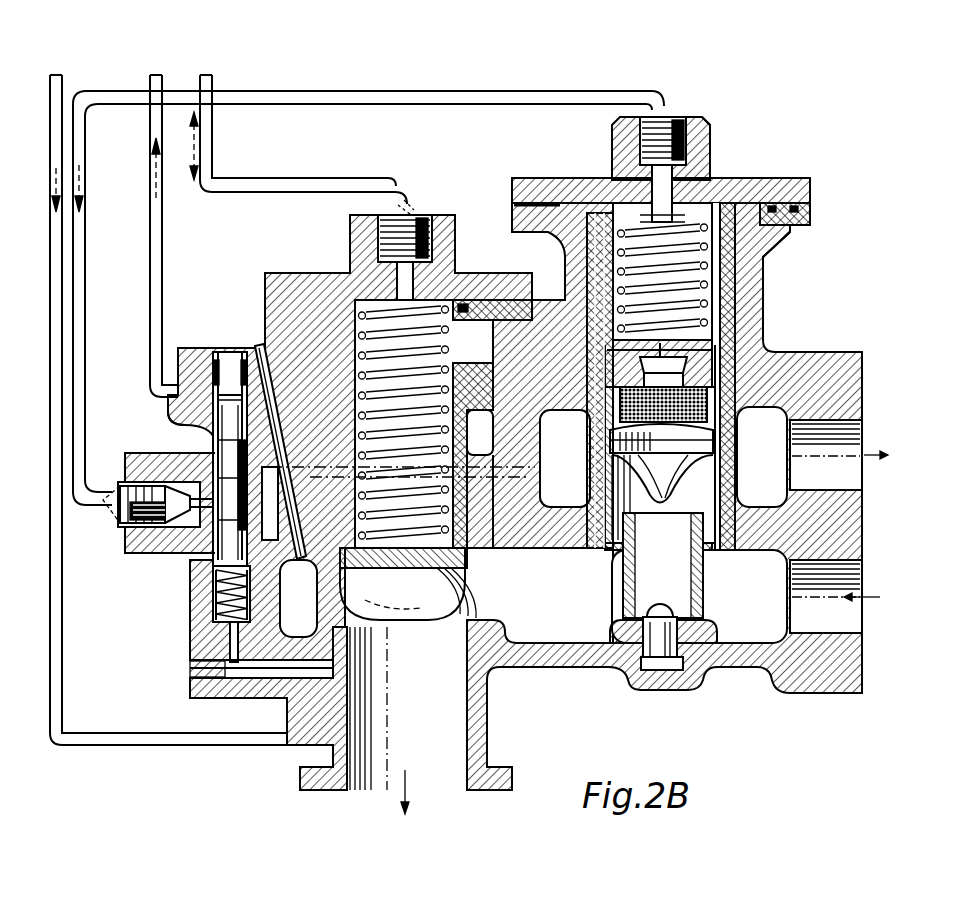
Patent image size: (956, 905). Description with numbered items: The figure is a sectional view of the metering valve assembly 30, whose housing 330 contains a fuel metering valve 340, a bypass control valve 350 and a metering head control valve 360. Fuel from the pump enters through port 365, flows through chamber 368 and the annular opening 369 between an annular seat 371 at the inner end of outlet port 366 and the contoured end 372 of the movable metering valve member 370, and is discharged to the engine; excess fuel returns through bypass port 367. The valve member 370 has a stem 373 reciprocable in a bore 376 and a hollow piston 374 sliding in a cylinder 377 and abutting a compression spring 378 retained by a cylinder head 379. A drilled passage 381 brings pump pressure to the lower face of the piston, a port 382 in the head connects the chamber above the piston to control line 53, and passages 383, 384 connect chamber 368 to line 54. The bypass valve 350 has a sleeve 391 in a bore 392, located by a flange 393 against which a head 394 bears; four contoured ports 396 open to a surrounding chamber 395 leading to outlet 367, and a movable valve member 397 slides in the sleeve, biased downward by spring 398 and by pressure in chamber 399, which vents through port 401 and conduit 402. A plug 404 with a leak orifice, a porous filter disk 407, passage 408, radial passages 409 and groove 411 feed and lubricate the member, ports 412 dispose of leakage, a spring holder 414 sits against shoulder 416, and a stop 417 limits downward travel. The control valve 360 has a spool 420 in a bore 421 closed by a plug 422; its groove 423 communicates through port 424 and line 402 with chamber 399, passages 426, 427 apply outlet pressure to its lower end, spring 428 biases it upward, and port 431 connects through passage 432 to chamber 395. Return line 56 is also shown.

The metering valve assembly 30 is at (812, 692).
The control line 53 is at (305, 176).
The line 54 is at (163, 238).
The return line 56 is at (262, 744).
The housing 330 is at (800, 352).
The fuel metering valve 340 is at (437, 215).
The bypass control valve 350 is at (716, 152).
The metering head control valve 360 is at (194, 589).
The inlet port 365 is at (865, 567).
The outlet port 366 is at (350, 786).
The bypass outlet port 367 is at (865, 428).
The chamber 368 is at (580, 638).
The annular opening 369 is at (455, 610).
The metering valve member 370 is at (305, 345).
The annular seat 371 is at (485, 618).
The contoured end 372 is at (350, 594).
The stem 373 is at (496, 429).
The piston 374 is at (482, 382).
The bore 376 is at (350, 485).
The cylinder 377 is at (488, 340).
The compression spring 378 is at (424, 424).
The cylinder head 379 is at (298, 275).
The drilled passage 381 is at (475, 545).
The port 382 is at (418, 262).
The passage 383 is at (309, 591).
The passage 384 is at (188, 348).
The sleeve 391 is at (733, 383).
The bore 392 is at (760, 306).
The flange 393 is at (812, 220).
The head 394 is at (805, 176).
The chamber 395 is at (660, 444).
The contoured ports 396 is at (692, 462).
The movable valve member 397 is at (590, 350).
The compression spring 398 is at (705, 190).
The chamber 399 is at (662, 205).
The port 401 is at (647, 149).
The conduit 402 is at (466, 106).
The plug 404 is at (583, 380).
The porous filter disk 407 is at (566, 455).
The passage 408 is at (600, 380).
The radial passages 409 is at (762, 453).
The circumferential groove 411 is at (755, 327).
The ports 412 is at (757, 276).
The spring holder 414 is at (663, 382).
The shoulder 416 is at (756, 457).
The stop 417 is at (702, 578).
The spool 420 is at (193, 562).
The bore 421 is at (205, 425).
The plug 422 is at (228, 348).
The intermediate groove 423 is at (212, 470).
The port 424 is at (198, 520).
The passage 426 is at (282, 680).
The passage 427 is at (240, 640).
The compression spring 428 is at (206, 614).
The port 431 is at (305, 560).
The passage 432 is at (516, 501).